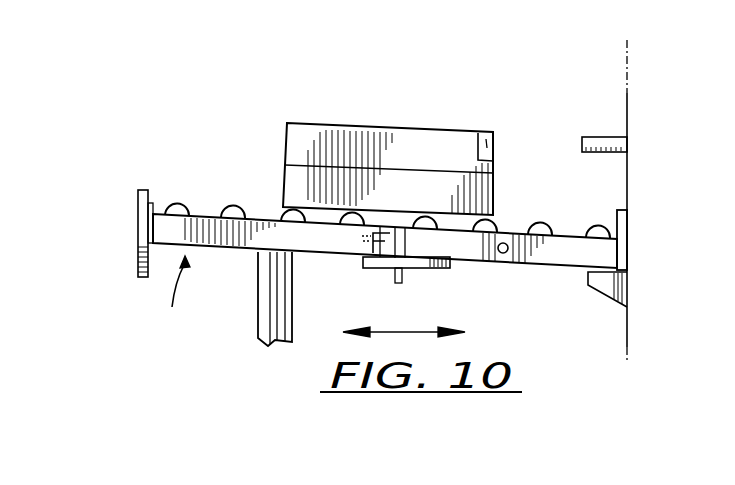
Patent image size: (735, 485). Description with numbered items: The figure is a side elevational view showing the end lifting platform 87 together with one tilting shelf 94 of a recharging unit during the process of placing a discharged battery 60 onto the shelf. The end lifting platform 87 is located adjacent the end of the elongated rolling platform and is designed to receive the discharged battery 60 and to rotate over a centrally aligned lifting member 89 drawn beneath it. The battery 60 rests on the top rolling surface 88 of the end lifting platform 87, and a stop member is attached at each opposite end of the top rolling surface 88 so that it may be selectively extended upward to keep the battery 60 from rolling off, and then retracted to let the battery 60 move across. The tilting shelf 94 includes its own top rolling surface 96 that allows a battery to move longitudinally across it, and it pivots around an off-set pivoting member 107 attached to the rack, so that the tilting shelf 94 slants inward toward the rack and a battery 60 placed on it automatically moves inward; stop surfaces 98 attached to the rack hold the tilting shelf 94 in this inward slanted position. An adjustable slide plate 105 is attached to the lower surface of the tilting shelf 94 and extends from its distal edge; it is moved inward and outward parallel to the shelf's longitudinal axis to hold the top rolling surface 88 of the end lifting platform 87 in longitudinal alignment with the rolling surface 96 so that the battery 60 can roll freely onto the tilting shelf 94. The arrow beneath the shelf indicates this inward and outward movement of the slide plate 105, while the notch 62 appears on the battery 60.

The battery 60 is at (388, 125).
The cassette notch 62 is at (486, 147).
The end lifting platform 87 is at (169, 297).
The top rolling surface 88 is at (212, 215).
The lifting member 89 is at (275, 281).
The tilting shelf 94 is at (615, 256).
The top rolling surface 96 is at (603, 217).
The stop surfaces 98 is at (613, 297).
The adjustable slide plate 105 is at (430, 270).
The off-set pivoting member 107 is at (508, 241).